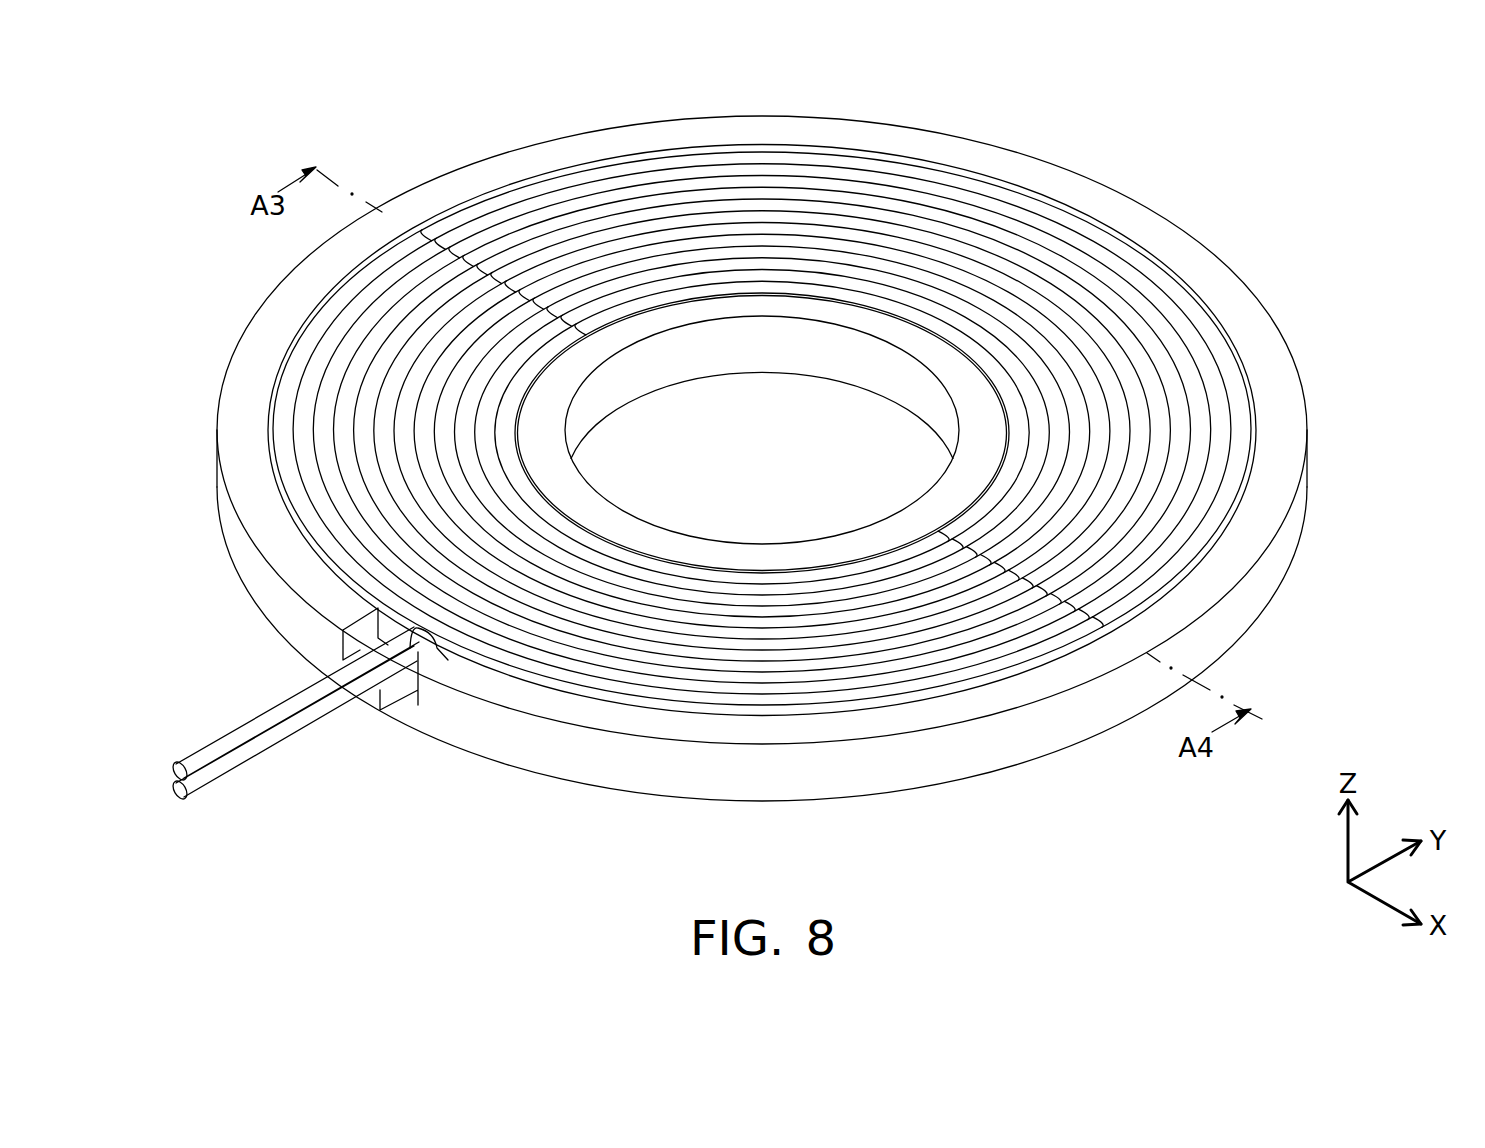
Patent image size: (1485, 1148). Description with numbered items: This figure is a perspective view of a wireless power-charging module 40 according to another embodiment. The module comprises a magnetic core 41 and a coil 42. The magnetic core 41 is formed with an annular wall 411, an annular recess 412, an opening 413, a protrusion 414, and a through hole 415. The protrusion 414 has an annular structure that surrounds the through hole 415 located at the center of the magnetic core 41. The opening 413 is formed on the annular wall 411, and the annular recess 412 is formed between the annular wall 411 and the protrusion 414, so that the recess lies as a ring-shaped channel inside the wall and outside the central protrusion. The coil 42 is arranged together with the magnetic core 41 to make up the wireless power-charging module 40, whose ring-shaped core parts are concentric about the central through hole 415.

The wireless power-charging module 40 is at (246, 77).
The magnetic core 41 is at (212, 467).
The coil 42 is at (312, 490).
The annular wall 411 is at (1238, 292).
The annular recess 412 is at (1219, 538).
The opening 413 is at (407, 685).
The protrusion 414 is at (967, 377).
The through hole 415 is at (820, 420).